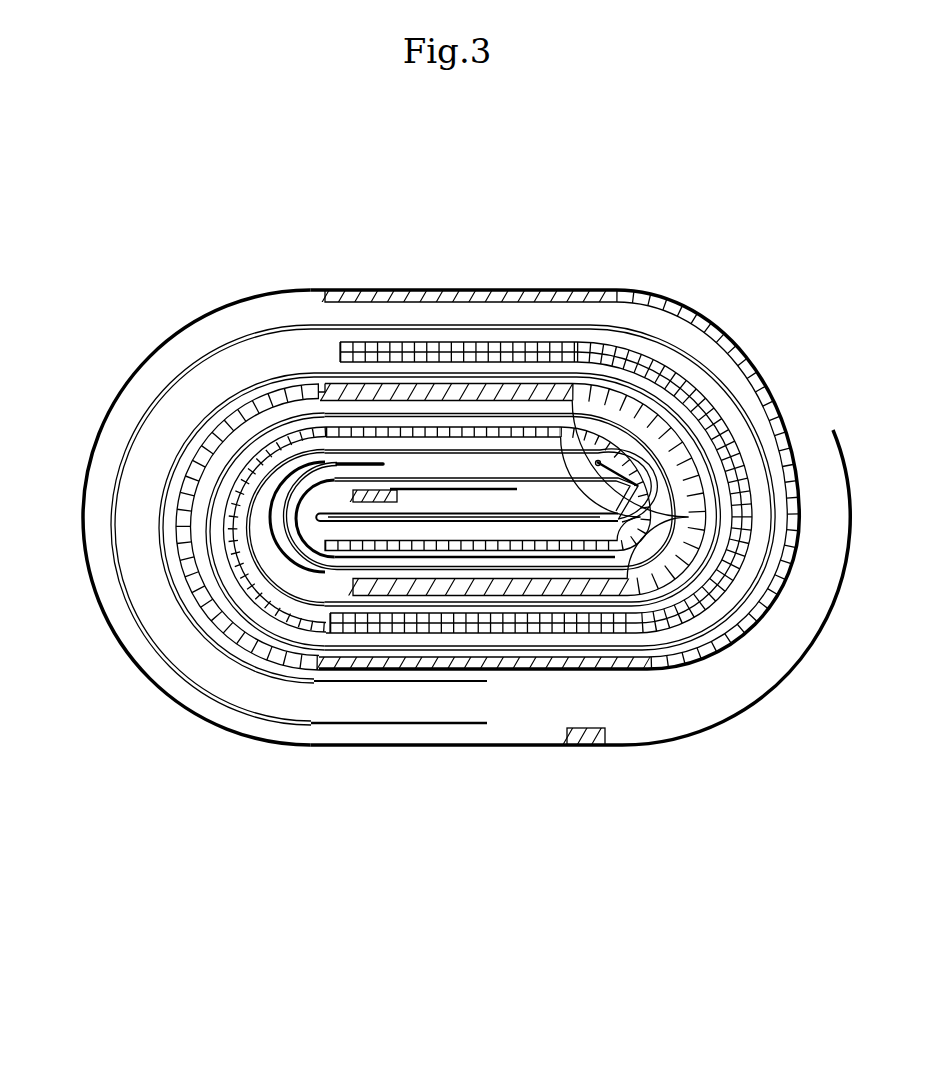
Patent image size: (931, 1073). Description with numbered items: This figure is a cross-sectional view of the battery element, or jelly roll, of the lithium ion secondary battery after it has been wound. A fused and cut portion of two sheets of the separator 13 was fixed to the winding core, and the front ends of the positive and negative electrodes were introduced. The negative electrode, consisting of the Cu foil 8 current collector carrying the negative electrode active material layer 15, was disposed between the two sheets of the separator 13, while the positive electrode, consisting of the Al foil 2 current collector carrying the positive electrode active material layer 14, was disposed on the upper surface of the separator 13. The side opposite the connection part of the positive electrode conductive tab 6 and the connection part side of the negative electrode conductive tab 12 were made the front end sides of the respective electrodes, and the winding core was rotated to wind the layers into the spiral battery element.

The Al foil 2 is at (717, 730).
The positive electrode conductive tab 6 is at (583, 748).
The Cu foil 8 is at (232, 533).
The negative electrode conductive tab 12 is at (379, 490).
The separator 13 is at (192, 368).
The positive electrode active material layer 14 is at (585, 291).
The negative electrode active material layer 15 is at (333, 628).